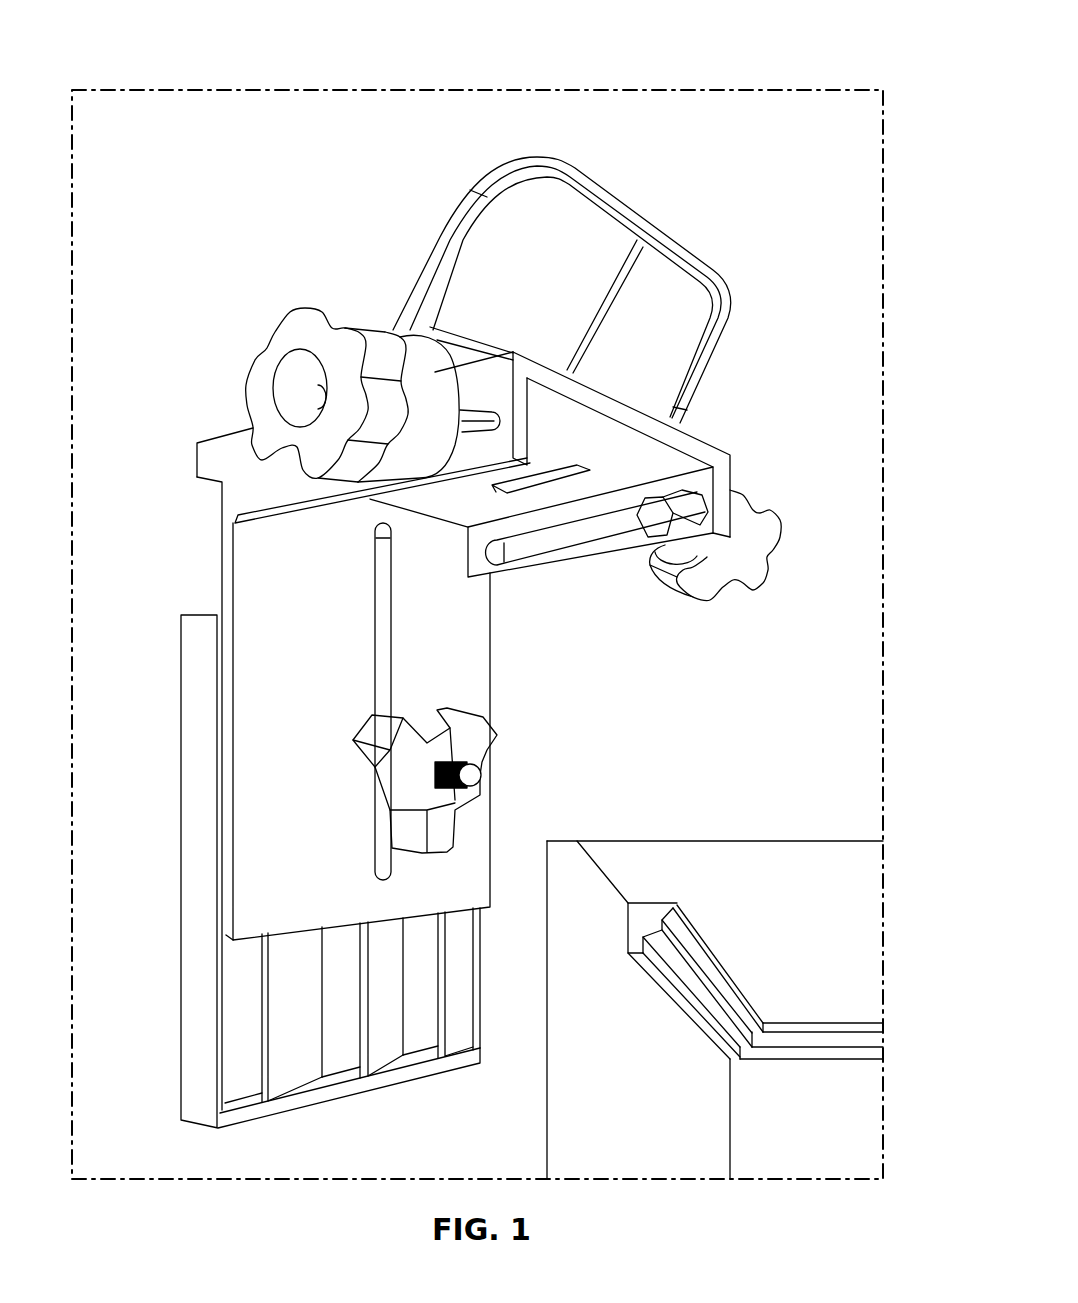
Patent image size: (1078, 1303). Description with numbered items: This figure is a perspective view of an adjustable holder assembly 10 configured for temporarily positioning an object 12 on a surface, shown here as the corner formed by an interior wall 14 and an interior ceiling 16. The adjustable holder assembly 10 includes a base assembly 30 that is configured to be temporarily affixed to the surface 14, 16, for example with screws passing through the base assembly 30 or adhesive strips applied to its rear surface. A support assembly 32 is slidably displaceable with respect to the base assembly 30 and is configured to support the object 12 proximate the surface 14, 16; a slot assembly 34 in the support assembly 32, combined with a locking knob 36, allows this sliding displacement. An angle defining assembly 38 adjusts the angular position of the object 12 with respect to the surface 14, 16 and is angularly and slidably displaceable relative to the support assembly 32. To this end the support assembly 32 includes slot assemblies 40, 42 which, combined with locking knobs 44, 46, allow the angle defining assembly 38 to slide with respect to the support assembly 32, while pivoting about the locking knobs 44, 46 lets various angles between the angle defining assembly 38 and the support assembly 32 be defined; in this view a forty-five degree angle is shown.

The adjustable holder assembly 10 is at (108, 44).
The object 12 is at (870, 1042).
The interior wall 14 is at (562, 1070).
The interior ceiling 16 is at (740, 853).
The base assembly 30 is at (395, 1083).
The support assembly 32 is at (337, 731).
The slot assembly 34 is at (383, 648).
The locking knob 36 is at (388, 792).
The angle defining assembly 38 is at (722, 293).
The slot assembly 40 is at (439, 718).
The slot assembly 42 is at (543, 553).
The locking knob 44 is at (258, 377).
The locking knob 46 is at (705, 600).